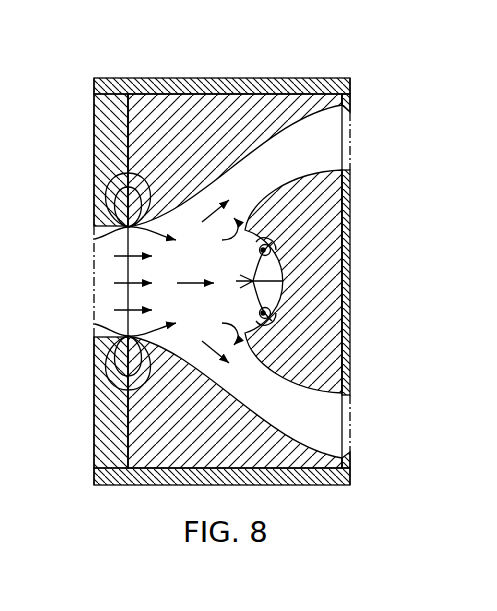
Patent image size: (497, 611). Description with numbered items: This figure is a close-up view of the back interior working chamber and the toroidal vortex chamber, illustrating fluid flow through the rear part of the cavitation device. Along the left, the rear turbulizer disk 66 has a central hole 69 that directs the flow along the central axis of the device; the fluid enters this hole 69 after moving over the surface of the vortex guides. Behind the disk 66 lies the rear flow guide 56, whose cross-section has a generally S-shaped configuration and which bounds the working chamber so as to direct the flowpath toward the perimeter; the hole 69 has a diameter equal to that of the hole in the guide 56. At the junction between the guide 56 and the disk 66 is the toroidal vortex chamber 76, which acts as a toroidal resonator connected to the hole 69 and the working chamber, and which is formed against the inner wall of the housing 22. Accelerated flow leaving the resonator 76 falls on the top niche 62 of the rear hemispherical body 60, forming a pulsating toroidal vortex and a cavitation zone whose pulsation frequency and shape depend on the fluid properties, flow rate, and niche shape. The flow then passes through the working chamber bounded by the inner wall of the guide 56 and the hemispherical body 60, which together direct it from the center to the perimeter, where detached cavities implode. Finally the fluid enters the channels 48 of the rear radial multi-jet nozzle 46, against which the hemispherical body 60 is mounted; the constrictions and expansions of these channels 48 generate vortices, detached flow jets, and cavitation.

The housing 22 is at (147, 83).
The rear flow guide 56 is at (192, 118).
The rear turbulizer disk 66 is at (97, 122).
The channels 48 is at (347, 133).
The rear hemispherical body 60 is at (332, 208).
The top niche 62 is at (282, 280).
The rear radial multi-jet nozzle 46 is at (347, 366).
The central hole 69 is at (100, 292).
The toroidal vortex chamber 76 is at (107, 355).